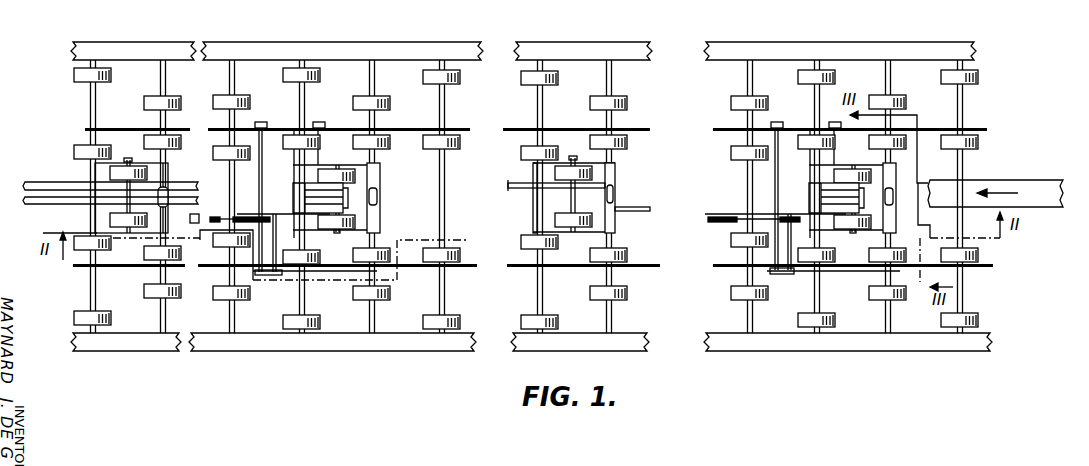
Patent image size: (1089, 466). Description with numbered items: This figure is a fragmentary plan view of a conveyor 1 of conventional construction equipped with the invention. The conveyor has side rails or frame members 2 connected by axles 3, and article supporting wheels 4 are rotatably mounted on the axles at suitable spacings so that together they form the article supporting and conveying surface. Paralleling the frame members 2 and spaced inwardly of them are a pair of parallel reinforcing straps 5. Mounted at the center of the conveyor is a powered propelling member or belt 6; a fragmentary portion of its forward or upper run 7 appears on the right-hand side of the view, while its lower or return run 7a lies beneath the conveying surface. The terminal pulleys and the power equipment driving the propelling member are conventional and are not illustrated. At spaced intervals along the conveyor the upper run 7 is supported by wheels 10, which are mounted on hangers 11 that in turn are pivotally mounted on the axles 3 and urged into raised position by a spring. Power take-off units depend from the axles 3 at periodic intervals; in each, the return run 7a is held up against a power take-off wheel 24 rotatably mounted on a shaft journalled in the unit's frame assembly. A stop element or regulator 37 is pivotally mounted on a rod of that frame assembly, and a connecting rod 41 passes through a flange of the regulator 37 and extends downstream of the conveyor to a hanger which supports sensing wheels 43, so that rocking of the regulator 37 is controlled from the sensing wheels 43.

The conveyor 1 is at (600, 30).
The frame members 2 is at (348, 50).
The axles 3 is at (231, 70).
The article supporting wheels 4 is at (170, 100).
The reinforcing straps 5 is at (108, 128).
The propelling member 6 is at (1003, 172).
The upper run 7 is at (1037, 185).
The return run 7a is at (47, 182).
The wheels 10 is at (328, 172).
The hangers 11 is at (377, 173).
The power take-off wheel 24 is at (298, 187).
The regulator 37 is at (270, 216).
The connecting rod 41 is at (213, 218).
The sensing wheels 43 is at (117, 172).